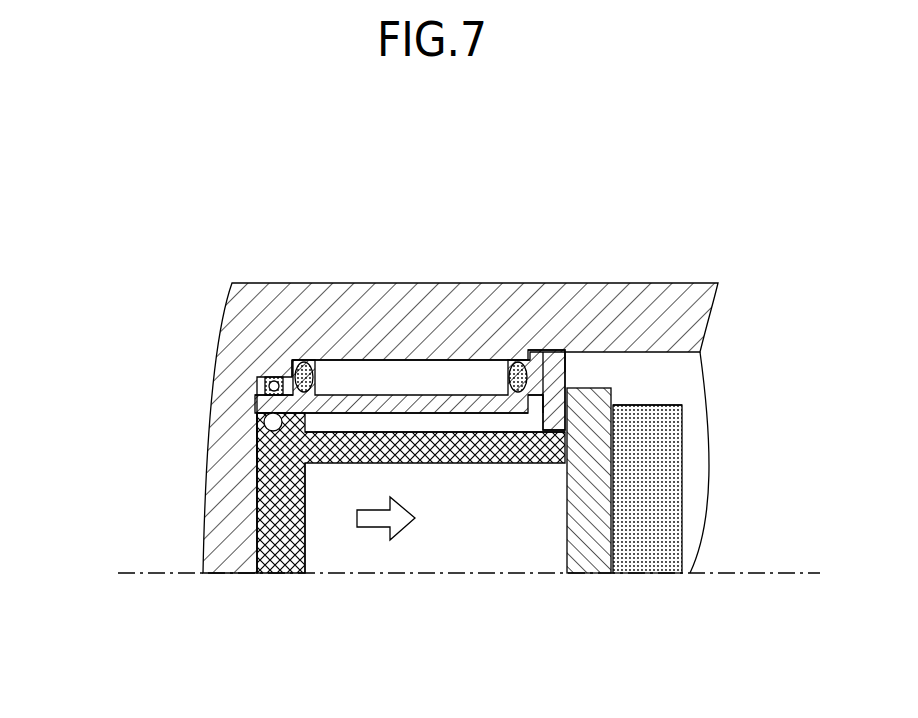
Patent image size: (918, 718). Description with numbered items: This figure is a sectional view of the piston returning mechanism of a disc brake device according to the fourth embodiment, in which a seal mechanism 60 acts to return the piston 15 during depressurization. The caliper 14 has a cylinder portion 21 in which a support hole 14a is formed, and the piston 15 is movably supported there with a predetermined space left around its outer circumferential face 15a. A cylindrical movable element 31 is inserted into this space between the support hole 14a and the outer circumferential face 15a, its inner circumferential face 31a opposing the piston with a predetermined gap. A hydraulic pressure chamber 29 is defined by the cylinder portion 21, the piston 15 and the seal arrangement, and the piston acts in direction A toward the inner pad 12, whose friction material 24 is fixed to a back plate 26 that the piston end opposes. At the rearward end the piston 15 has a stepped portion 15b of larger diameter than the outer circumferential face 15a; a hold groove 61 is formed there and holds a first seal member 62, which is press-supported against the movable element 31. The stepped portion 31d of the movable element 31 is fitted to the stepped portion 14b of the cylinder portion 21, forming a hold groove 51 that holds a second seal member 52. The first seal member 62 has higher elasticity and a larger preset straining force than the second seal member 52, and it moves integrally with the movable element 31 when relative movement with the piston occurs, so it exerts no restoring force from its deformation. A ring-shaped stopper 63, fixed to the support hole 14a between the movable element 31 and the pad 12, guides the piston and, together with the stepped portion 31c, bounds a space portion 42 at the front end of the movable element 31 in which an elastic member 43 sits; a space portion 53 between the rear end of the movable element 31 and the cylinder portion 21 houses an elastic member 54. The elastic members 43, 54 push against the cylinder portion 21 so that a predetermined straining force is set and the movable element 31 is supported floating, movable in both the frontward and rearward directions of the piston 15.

The inner pad 12 is at (656, 404).
The caliper 14 is at (653, 307).
The cylinder portion 21 is at (460, 376).
The support hole 14a is at (356, 360).
The stepped portion of the cylinder portion 14b is at (292, 370).
The piston 15 is at (256, 402).
The outer circumferential face 15a is at (405, 430).
The stepped portion of the piston 15b is at (290, 426).
The friction material 24 is at (638, 564).
The back plate 26 is at (586, 564).
The hydraulic pressure chamber 29 is at (257, 510).
The movable element 31 is at (390, 385).
The inner circumferential face 31a is at (445, 415).
The stepped portion of the movable element 31c is at (535, 435).
The stepped portion of the movable element 31d is at (257, 398).
The space portion 42 is at (527, 400).
The elastic member 43 is at (519, 362).
The hold groove 51 is at (279, 378).
The second seal member 52 is at (264, 378).
The space portion 53 is at (307, 363).
The elastic member 54 is at (305, 463).
The seal mechanism 60 is at (191, 287).
The hold groove 61 is at (257, 446).
The first seal member 62 is at (257, 418).
The stopper 63 is at (560, 372).
The direction arrow A is at (377, 530).